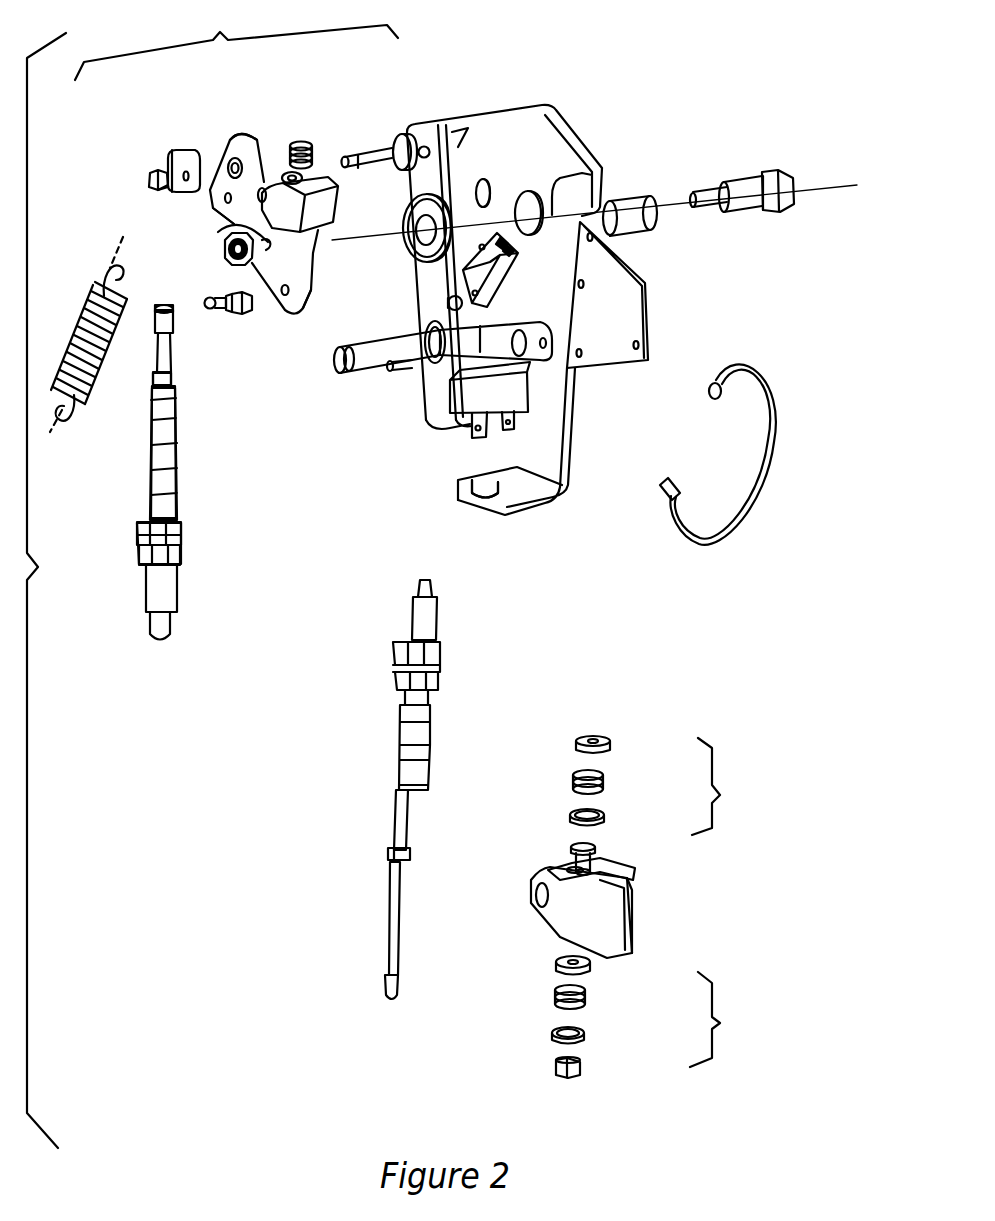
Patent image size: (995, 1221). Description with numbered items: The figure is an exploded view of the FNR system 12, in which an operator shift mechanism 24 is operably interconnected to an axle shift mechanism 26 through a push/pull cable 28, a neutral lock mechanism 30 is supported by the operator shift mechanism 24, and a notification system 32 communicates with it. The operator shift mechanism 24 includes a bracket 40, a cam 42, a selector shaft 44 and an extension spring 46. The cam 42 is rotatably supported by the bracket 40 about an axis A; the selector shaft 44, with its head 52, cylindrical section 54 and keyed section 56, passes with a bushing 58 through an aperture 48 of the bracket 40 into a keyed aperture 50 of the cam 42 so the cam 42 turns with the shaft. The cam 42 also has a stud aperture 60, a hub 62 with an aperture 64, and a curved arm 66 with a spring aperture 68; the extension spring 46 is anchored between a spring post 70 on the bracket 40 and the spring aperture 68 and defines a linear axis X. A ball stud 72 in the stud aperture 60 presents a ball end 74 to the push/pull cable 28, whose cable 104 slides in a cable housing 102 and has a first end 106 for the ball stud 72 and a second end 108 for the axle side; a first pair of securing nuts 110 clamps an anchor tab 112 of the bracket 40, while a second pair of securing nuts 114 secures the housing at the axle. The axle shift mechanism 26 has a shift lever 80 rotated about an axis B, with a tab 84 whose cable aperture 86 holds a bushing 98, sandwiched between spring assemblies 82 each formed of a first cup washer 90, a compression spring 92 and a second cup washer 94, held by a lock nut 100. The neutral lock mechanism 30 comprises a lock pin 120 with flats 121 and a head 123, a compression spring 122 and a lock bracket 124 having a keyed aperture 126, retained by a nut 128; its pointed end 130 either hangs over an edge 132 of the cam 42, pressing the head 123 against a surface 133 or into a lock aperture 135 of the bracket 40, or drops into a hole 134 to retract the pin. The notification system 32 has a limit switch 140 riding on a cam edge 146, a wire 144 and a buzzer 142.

The FNR system 12 is at (50, 590).
The operator shift mechanism 24 is at (498, 272).
The axle shift mechanism 26 is at (612, 658).
The push/pull cable 28 is at (176, 590).
The neutral lock mechanism 30 is at (236, 43).
The notification system 32 is at (507, 212).
The bracket 40 is at (555, 106).
The cam 42 is at (327, 195).
The selector shaft 44 is at (740, 182).
The extension spring 46 is at (82, 396).
The aperture 48 is at (532, 208).
The keyed aperture 50 is at (218, 232).
The head 52 is at (796, 178).
The cylindrical section 54 is at (744, 212).
The keyed section 56 is at (710, 192).
The bushing 58 is at (652, 215).
The stud aperture 60 is at (290, 290).
The hub 62 is at (243, 164).
The aperture 64 is at (232, 160).
The curved arm 66 is at (313, 218).
The spring aperture 68 is at (264, 188).
The spring post 70 is at (372, 366).
The ball stud 72 is at (242, 312).
The ball end 74 is at (210, 310).
The shift lever 80 is at (568, 918).
The spring assemblies 82 is at (720, 902).
The tab 84 is at (602, 878).
The cable aperture 86 is at (572, 871).
The first cup washer 90 is at (574, 745).
The compression spring 92 is at (604, 785).
The second cup washer 94 is at (568, 815).
The bushing 98 is at (598, 846).
The lock nut 100 is at (390, 855).
The cable housing 102 is at (174, 466).
The cable 104 is at (172, 378).
The first end 106 is at (163, 303).
The second end 108 is at (388, 980).
The first pair of securing nuts 110 is at (181, 538).
The anchor tab 112 is at (492, 502).
The second pair of securing nuts 114 is at (393, 665).
The lock pin 120 is at (384, 148).
The flats 121 is at (355, 156).
The compression spring 122 is at (298, 140).
The head 123 is at (405, 134).
The lock bracket 124 is at (170, 168).
The keyed aperture 126 is at (168, 186).
The nut 128 is at (149, 180).
The pointed end 130 is at (186, 150).
The edge 132 is at (226, 137).
The surface 133 is at (452, 132).
The hole 134 is at (225, 202).
The lock aperture 135 is at (483, 179).
The limit switch 140 is at (505, 238).
The buzzer 142 is at (458, 414).
The wire 144 is at (756, 450).
The cam edge 146 is at (312, 310).
The axis A is at (225, 252).
The axis B is at (536, 897).
The linear axis X is at (84, 345).